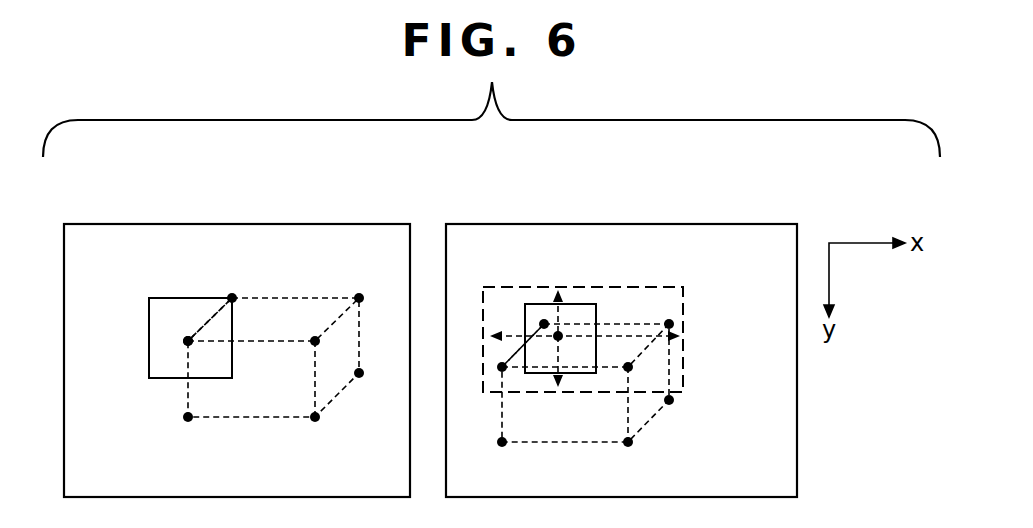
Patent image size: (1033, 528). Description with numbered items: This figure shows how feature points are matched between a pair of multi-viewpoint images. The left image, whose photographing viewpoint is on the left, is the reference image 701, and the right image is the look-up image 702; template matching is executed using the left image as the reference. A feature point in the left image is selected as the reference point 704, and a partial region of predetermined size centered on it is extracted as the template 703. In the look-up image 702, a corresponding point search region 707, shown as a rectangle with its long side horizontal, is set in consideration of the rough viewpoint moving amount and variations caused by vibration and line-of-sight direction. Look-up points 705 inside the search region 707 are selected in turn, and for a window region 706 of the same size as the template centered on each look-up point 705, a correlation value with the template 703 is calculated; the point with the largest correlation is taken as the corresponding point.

The reference image 701 is at (235, 223).
The look-up image 702 is at (633, 224).
The template 703 is at (168, 297).
The reference point 704 is at (188, 341).
The look-up point 705 is at (558, 336).
The window region 706 is at (531, 303).
The corresponding point search region 707 is at (686, 297).